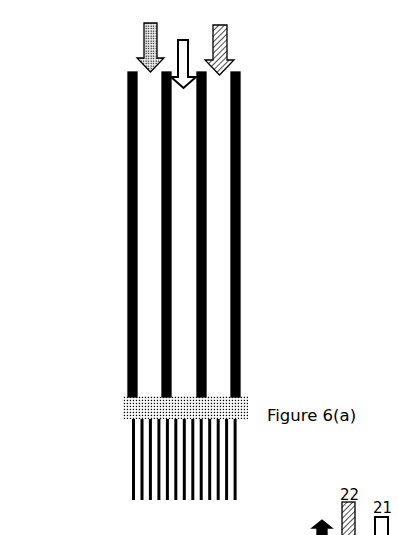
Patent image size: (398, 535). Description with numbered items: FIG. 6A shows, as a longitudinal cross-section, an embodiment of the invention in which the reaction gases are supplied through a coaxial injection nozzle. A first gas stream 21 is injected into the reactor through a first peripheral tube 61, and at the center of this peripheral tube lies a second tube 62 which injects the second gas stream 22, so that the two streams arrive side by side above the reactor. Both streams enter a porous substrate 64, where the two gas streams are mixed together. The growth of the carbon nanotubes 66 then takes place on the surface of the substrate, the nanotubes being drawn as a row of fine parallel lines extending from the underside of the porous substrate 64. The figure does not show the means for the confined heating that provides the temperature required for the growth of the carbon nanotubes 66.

The first gas stream 21 is at (183, 57).
The second gas stream 22 is at (185, 41).
The first peripheral tube 61 is at (180, 290).
The second tube 62 is at (145, 220).
The porous substrate 64 is at (130, 411).
The carbon nanotubes 66 is at (142, 465).